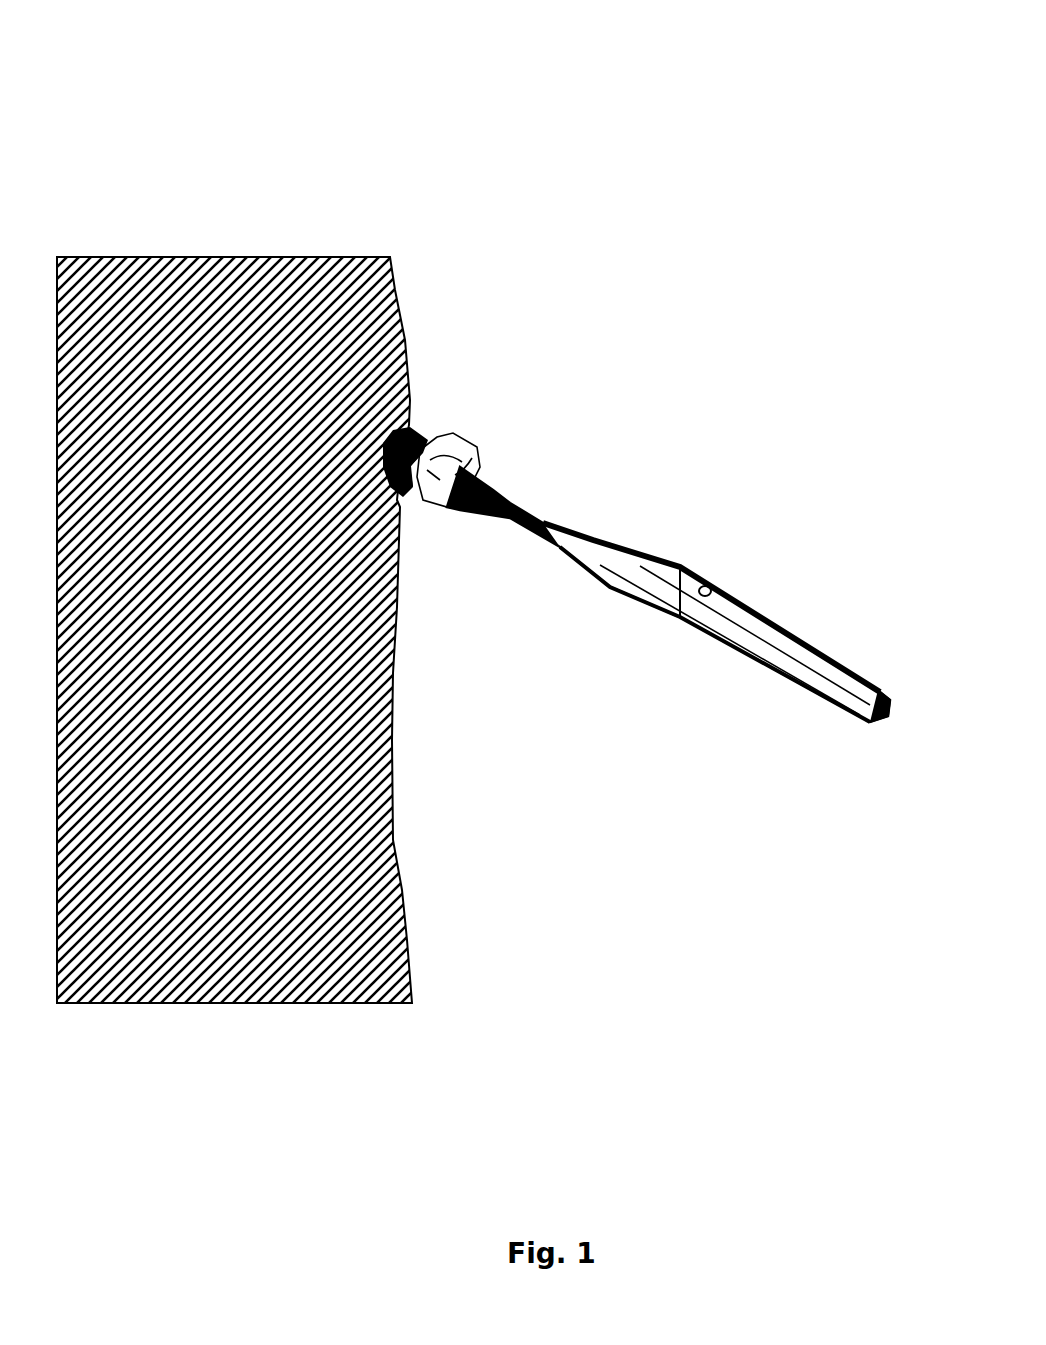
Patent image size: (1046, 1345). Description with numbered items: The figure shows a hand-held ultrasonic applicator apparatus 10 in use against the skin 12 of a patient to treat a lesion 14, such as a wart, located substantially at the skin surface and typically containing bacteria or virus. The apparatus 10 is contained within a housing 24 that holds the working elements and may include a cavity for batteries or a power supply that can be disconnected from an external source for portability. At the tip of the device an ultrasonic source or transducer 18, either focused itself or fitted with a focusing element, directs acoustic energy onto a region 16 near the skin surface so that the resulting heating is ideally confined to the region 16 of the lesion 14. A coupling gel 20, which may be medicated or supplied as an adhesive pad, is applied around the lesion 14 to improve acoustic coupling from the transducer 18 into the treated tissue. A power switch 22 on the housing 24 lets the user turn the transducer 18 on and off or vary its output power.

The apparatus 10 is at (496, 138).
The skin 12 is at (298, 237).
The lesion 14 is at (425, 407).
The region 16 is at (372, 456).
The ultrasonic source 18 is at (471, 432).
The coupling gel 20 is at (430, 528).
The power switch 22 is at (708, 565).
The housing 24 is at (806, 620).